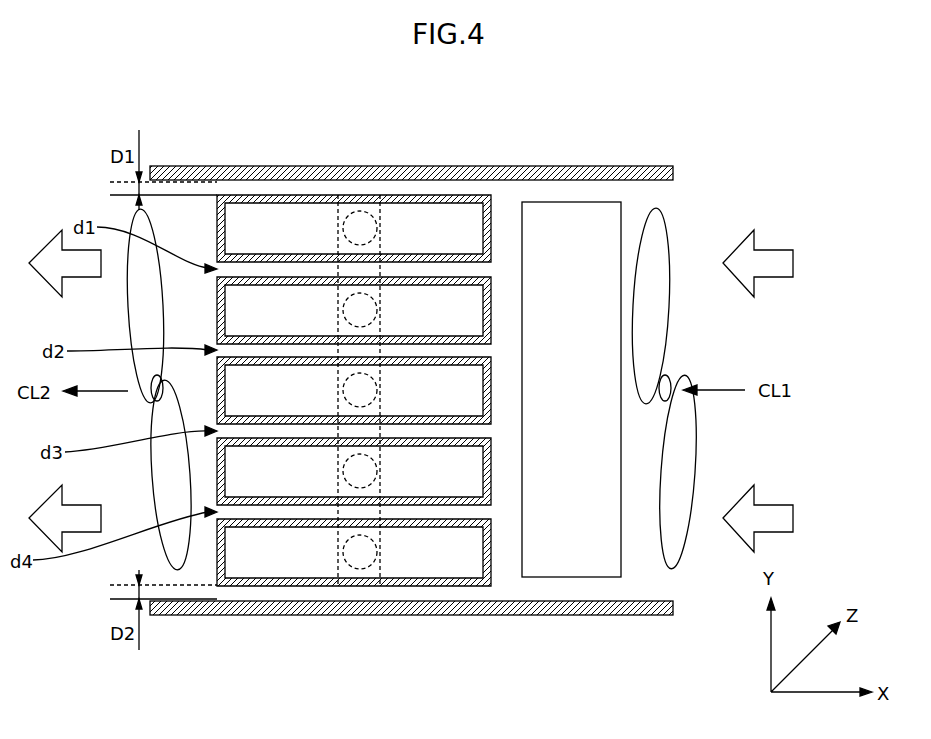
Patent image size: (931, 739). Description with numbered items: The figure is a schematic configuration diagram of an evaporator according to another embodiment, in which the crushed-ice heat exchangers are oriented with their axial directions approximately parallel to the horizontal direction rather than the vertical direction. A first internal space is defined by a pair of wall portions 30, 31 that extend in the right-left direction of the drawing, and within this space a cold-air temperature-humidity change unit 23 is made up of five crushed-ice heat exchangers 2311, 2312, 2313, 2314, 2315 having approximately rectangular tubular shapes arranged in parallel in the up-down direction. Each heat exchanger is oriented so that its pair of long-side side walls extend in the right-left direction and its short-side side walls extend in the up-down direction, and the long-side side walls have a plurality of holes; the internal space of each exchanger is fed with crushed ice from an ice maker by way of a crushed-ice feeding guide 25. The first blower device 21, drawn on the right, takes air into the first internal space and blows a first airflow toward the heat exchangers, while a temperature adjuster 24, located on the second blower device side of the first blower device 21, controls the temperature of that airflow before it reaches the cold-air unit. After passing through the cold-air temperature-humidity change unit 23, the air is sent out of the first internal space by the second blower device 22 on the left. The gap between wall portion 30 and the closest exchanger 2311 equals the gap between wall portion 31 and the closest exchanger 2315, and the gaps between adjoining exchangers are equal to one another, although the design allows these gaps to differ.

The first blower device 21 is at (683, 556).
The second blower device 22 is at (158, 548).
The cold-air temperature-humidity change unit 23 is at (280, 381).
The temperature adjuster 24 is at (602, 578).
The crushed-ice feeding guide 25 is at (374, 213).
The wall portion 30 is at (652, 166).
The wall portion 31 is at (657, 616).
The crushed-ice heat exchanger 2311 is at (283, 222).
The crushed-ice heat exchanger 2312 is at (246, 296).
The crushed-ice heat exchanger 2313 is at (246, 387).
The crushed-ice heat exchanger 2314 is at (246, 455).
The crushed-ice heat exchanger 2315 is at (262, 567).